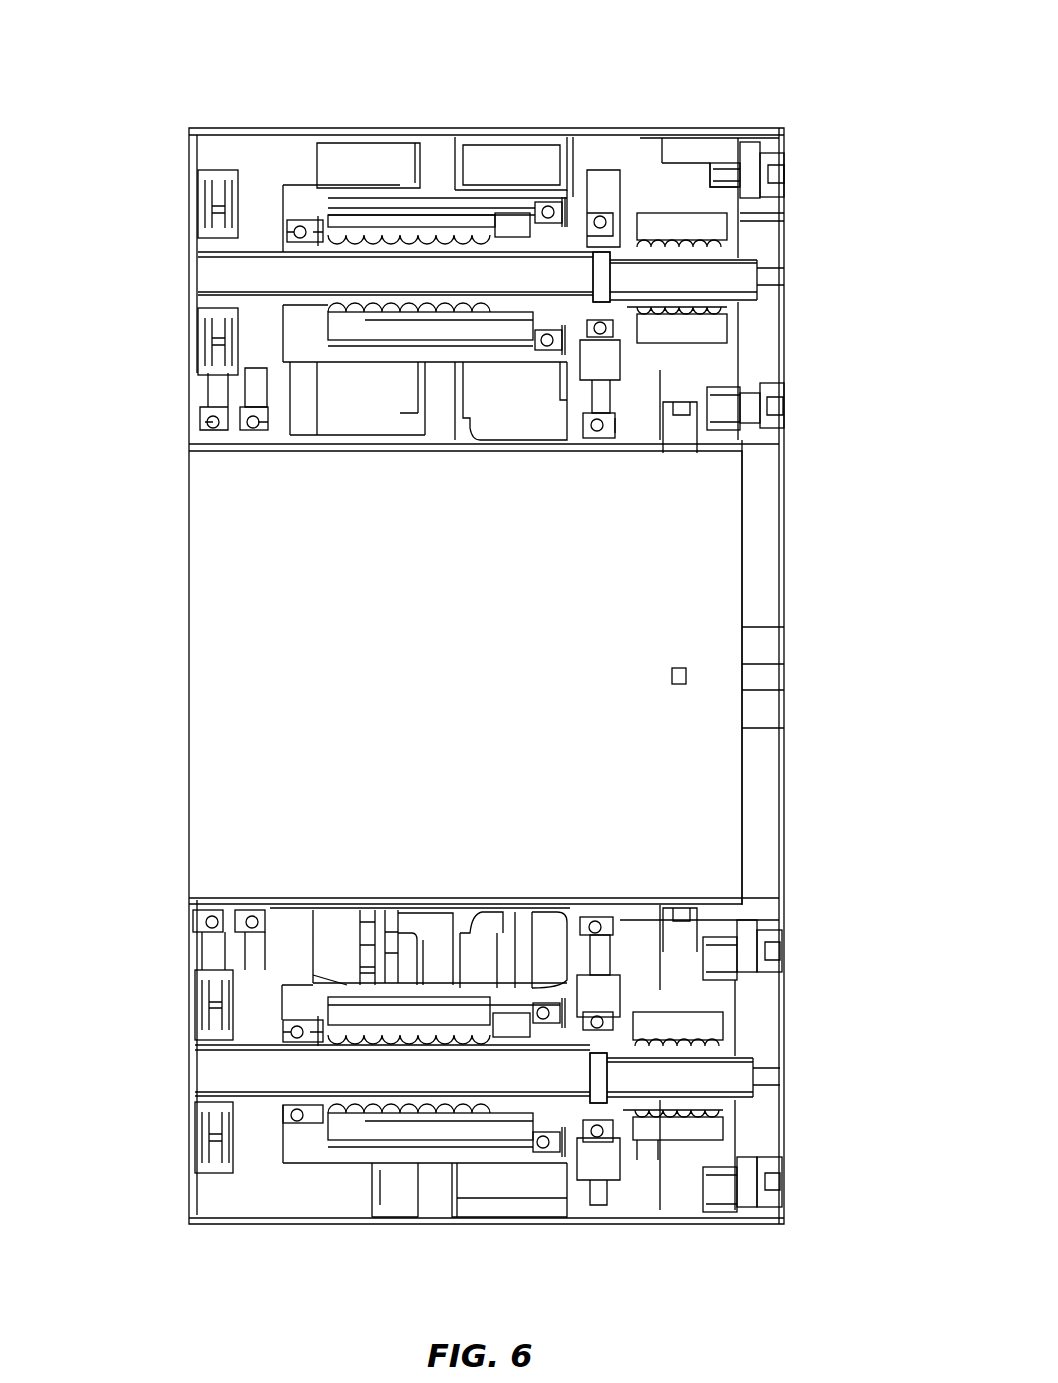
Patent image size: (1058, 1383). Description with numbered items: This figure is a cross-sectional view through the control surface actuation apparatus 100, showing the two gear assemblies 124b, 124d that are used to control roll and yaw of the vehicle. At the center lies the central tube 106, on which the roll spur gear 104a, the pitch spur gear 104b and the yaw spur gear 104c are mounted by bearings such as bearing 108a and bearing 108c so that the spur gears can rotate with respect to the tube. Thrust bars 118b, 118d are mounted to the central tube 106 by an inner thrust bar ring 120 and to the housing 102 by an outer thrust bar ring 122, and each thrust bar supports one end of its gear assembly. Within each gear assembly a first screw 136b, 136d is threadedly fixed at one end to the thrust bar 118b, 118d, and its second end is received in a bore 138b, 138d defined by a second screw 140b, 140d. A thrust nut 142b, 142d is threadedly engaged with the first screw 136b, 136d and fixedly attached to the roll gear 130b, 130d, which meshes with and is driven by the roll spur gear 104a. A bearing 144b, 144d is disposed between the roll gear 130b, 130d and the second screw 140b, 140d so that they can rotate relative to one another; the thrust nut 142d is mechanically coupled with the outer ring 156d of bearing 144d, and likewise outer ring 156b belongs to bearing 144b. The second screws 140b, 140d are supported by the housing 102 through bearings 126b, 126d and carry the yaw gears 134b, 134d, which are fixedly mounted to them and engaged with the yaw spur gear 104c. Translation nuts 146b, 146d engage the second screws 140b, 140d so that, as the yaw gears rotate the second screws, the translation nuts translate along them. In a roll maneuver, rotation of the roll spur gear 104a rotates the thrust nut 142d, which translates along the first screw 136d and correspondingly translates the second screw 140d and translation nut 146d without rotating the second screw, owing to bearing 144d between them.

The control surface actuation apparatus 100 is at (120, 78).
The housing 102 is at (363, 128).
The roll spur gear 104a is at (603, 400).
The pitch spur gear 104b is at (260, 393).
The yaw spur gear 104c is at (220, 393).
The central tube 106 is at (465, 672).
The bearing 108a is at (598, 432).
The bearing 108c is at (203, 430).
The thrust bar 118b is at (775, 208).
The thrust bar 118d is at (775, 1115).
The inner thrust bar ring 120 is at (722, 430).
The outer thrust bar ring 122 is at (720, 150).
The gear assembly 124b is at (185, 212).
The gear assembly 124d is at (180, 1017).
The bearing 126b is at (295, 222).
The bearing 126d is at (297, 1122).
The roll gear 130b is at (610, 175).
The roll gear 130d is at (598, 1162).
The yaw gear 134b is at (213, 333).
The yaw gear 134d is at (213, 1138).
The first screw 136b is at (717, 302).
The first screw 136d is at (702, 1102).
The bore 138b is at (600, 273).
The bore 138d is at (600, 1075).
The second screw 140b is at (230, 270).
The second screw 140d is at (213, 1063).
The thrust nut 142b is at (683, 227).
The thrust nut 142d is at (683, 1023).
The bearing 144b is at (595, 345).
The bearing 144d is at (600, 1005).
The translation nut 146b is at (400, 220).
The translation nut 146d is at (418, 1130).
The outer ring 156b is at (547, 200).
The outer ring 156d is at (605, 1140).